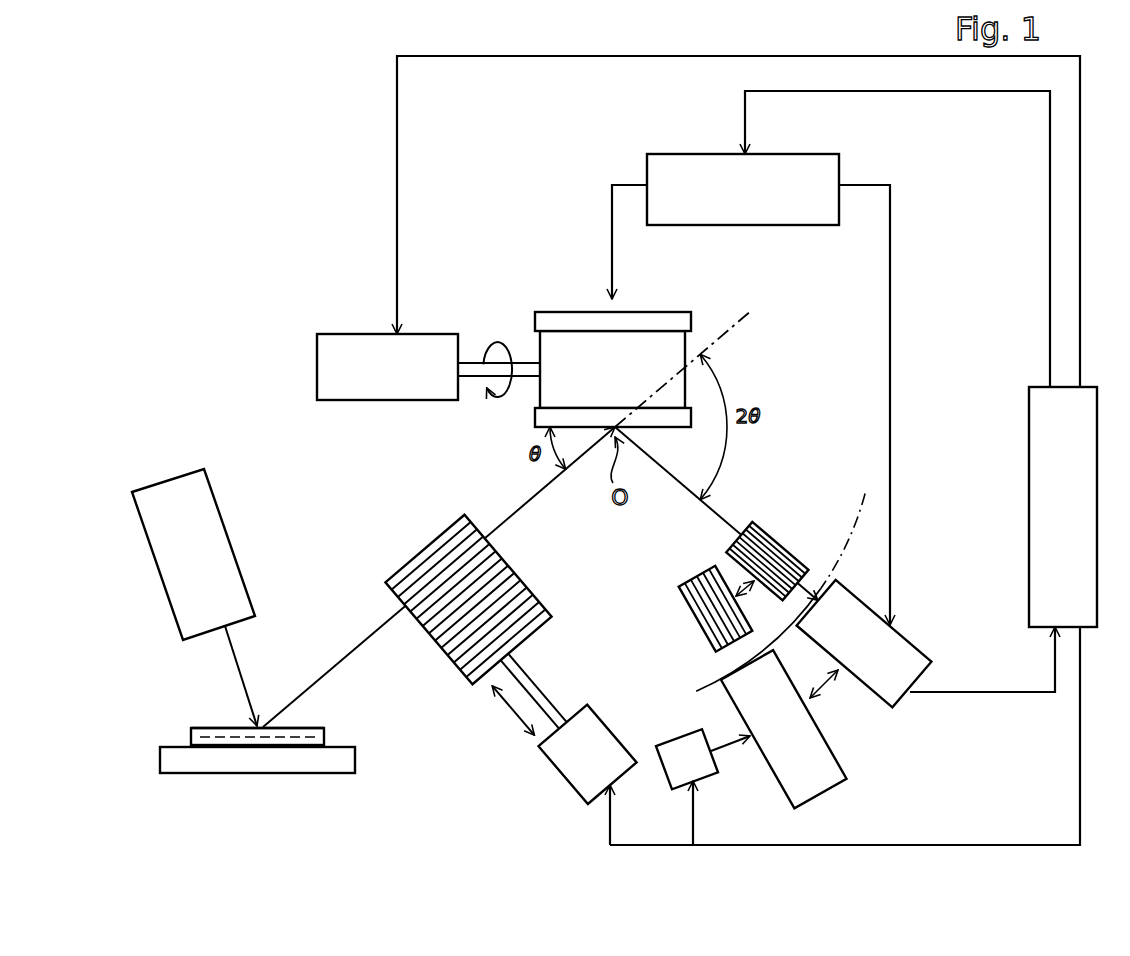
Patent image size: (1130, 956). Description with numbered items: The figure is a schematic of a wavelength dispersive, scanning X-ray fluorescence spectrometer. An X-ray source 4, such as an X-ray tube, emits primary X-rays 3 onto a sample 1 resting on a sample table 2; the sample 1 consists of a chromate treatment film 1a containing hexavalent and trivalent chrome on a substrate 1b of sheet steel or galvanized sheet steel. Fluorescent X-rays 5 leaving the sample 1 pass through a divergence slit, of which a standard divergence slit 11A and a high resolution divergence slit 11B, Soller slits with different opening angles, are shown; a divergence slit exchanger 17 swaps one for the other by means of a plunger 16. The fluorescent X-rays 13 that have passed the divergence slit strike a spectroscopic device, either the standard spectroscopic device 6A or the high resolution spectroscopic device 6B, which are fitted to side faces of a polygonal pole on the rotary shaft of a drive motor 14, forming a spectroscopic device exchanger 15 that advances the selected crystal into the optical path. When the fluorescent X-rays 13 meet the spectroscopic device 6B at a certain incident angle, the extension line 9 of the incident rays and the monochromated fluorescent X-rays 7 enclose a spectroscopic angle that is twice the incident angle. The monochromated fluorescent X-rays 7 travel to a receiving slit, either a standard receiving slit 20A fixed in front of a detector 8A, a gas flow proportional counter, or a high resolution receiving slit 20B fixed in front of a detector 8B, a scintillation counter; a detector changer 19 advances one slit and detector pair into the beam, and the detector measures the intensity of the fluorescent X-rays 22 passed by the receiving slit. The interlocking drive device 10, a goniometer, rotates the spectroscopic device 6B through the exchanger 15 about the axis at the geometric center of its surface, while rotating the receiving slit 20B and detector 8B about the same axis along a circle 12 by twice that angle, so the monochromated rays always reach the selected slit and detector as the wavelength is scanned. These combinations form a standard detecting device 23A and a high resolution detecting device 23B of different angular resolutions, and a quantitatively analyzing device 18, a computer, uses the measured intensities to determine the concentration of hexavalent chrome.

The sample 1 is at (330, 740).
The treatment film 1a is at (190, 742).
The substrate 1b is at (195, 738).
The sample table 2 is at (355, 765).
The primary X-rays 3 is at (238, 660).
The X-ray source 4 is at (233, 537).
The fluorescent X-rays 5 is at (372, 628).
The standard spectroscopic device 6A is at (537, 320).
The high resolution spectroscopic device 6B is at (535, 417).
The monochromated fluorescent X-rays 7 is at (723, 521).
The detector 8A is at (832, 790).
The detector 8B is at (903, 707).
The extension line 9 is at (732, 326).
The interlocking drive device 10 is at (703, 154).
The standard divergence slit 11A is at (480, 685).
The high resolution divergence slit 11B is at (425, 543).
The circle 12 is at (863, 500).
The fluorescent X-rays 13 is at (513, 514).
The drive motor 14 is at (352, 334).
The spectroscopic device exchanger 15 is at (527, 258).
The plunger 16 is at (570, 790).
The divergence slit exchanger 17 is at (508, 768).
The quantitatively analyzing device 18 is at (1029, 508).
The detector changer 19 is at (712, 777).
The standard receiving slit 20A is at (678, 582).
The high resolution receiving slit 20B is at (727, 551).
The fluorescent X-rays having passed through the receiving slit 22 is at (813, 590).
The standard detecting device 23A is at (953, 328).
The high resolution detecting device 23B is at (982, 659).